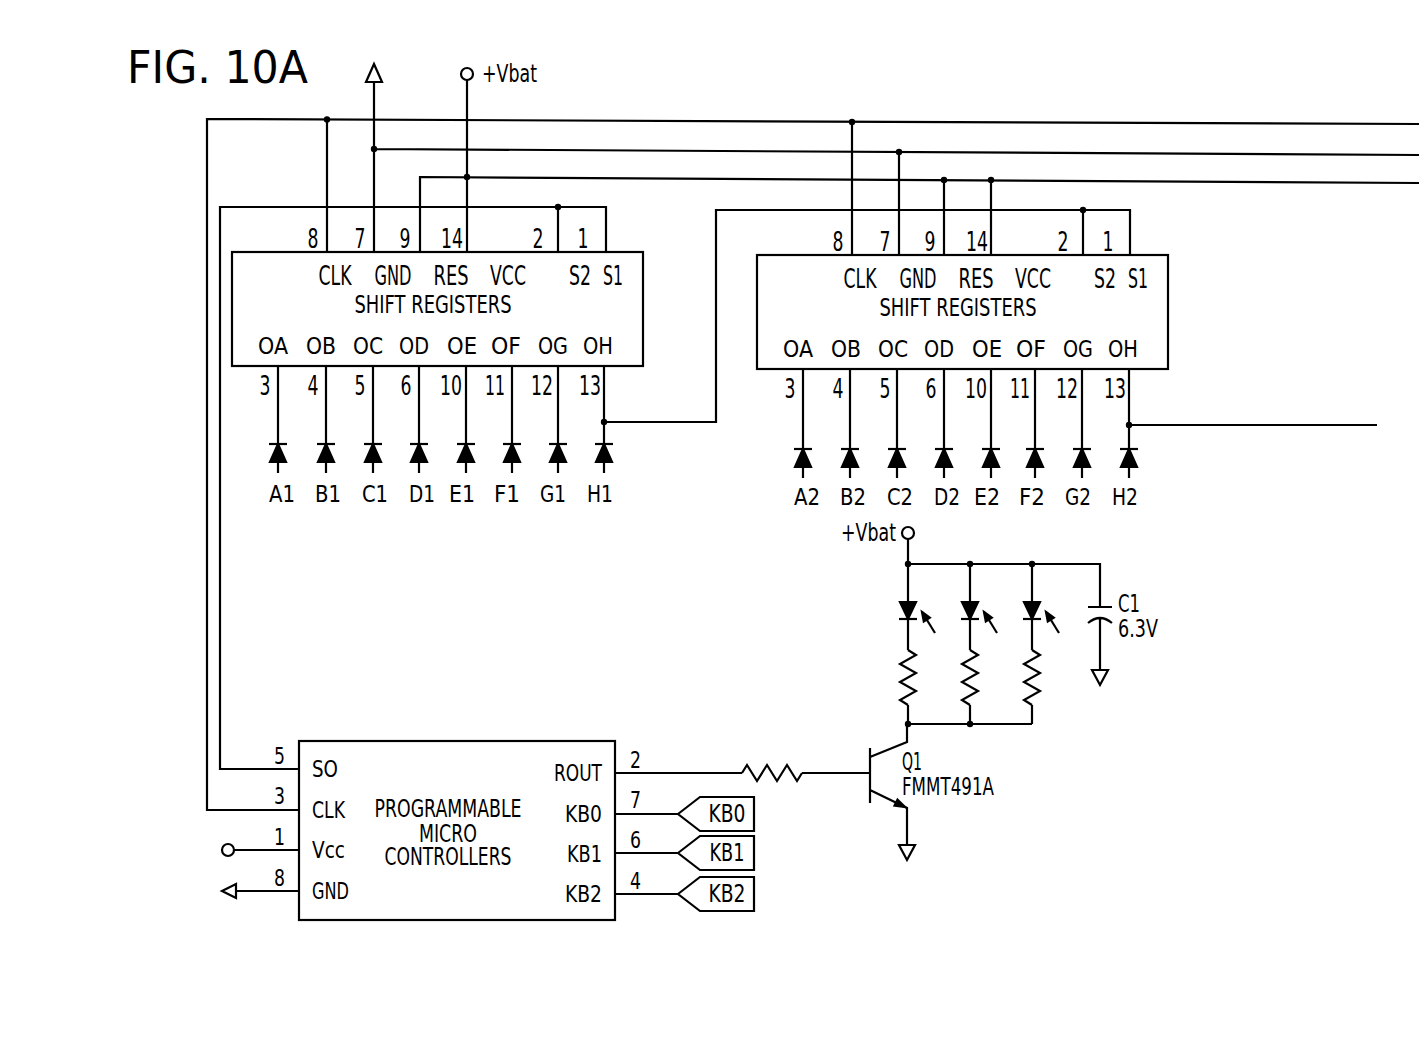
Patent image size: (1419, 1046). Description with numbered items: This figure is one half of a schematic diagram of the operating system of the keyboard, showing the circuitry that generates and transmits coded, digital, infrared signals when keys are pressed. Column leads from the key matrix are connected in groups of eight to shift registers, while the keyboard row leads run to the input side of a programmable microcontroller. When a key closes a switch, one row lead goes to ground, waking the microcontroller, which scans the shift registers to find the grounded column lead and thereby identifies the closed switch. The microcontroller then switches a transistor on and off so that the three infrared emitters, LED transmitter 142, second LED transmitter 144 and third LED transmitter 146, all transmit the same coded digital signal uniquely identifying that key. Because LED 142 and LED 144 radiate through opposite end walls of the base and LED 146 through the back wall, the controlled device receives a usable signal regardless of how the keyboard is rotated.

The LED transmitter 142 is at (897, 610).
The second LED transmitter 144 is at (966, 602).
The third LED transmitter 146 is at (1035, 603).